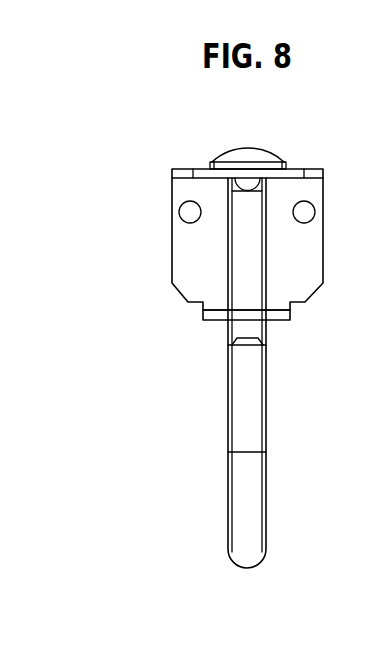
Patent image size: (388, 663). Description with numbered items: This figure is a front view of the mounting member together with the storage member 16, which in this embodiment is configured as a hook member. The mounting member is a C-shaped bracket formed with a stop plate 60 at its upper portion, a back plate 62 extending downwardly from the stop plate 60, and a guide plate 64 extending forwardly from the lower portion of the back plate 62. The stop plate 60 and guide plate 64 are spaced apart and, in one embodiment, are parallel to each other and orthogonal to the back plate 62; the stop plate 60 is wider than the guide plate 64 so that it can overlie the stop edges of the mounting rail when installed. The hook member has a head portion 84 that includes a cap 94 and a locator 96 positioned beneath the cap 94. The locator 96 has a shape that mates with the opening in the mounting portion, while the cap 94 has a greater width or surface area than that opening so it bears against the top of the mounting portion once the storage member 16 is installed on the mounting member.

The storage member 16 is at (250, 418).
The stop plate 60 is at (313, 169).
The back plate 62 is at (310, 237).
The guide plate 64 is at (282, 320).
The head portion 84 is at (258, 149).
The cap 94 is at (225, 153).
The locator 96 is at (236, 181).